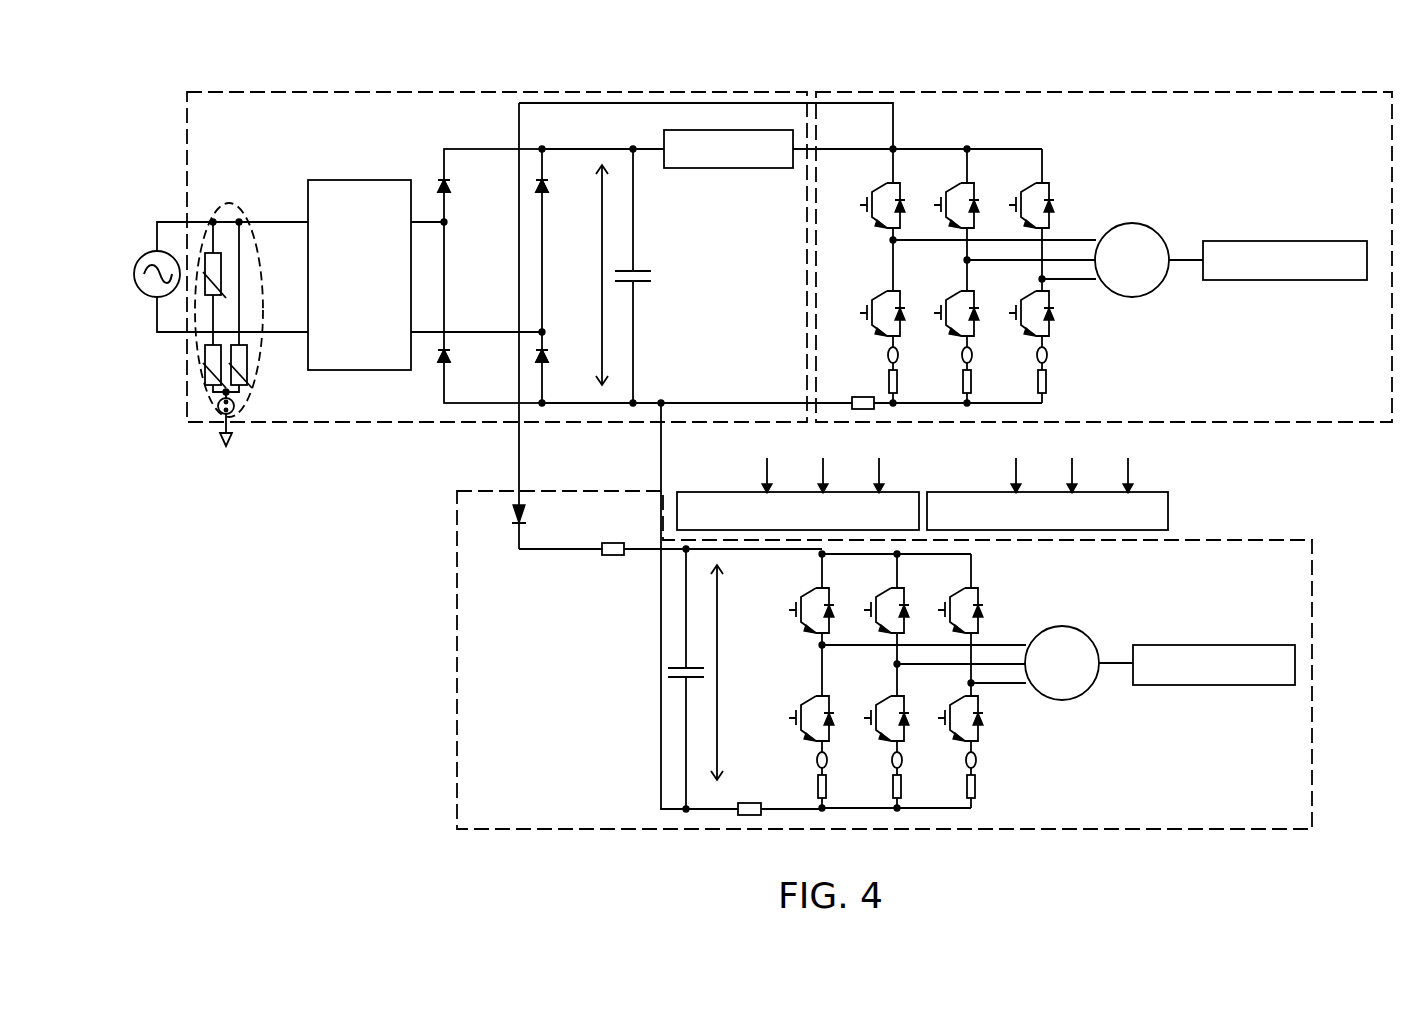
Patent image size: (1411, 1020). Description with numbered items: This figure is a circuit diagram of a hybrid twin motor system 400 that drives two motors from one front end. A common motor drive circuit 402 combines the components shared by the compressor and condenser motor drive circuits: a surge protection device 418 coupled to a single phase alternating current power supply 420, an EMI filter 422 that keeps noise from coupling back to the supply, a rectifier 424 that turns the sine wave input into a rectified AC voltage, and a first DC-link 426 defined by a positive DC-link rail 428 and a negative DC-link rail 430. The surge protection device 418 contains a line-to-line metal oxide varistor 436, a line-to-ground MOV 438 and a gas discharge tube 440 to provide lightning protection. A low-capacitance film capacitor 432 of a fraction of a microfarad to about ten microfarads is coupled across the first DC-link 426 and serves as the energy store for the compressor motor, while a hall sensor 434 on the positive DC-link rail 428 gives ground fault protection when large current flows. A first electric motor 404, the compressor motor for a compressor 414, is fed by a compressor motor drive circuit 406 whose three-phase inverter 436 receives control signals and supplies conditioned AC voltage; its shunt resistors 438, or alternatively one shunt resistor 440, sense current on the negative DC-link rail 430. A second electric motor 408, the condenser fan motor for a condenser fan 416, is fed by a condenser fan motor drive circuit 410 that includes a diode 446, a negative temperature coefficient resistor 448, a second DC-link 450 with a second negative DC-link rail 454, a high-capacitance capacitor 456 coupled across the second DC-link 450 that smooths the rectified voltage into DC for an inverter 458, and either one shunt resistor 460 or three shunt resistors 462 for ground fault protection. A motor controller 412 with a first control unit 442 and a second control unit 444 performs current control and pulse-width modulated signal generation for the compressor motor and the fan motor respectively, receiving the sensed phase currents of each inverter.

The hybrid twin motor system 400 is at (417, 58).
The common motor drive circuit 402 is at (247, 92).
The compressor motor 404 is at (1132, 223).
The compressor motor drive circuit 406 is at (983, 74).
The condenser fan motor 408 is at (1062, 626).
The condenser fan motor drive circuit 410 is at (457, 633).
The motor controller 412 is at (951, 469).
The compressor 414 is at (1258, 241).
The condenser fan 416 is at (1178, 645).
The surge protection device 418 is at (222, 203).
The power supply 420 is at (151, 252).
The EMI filter 422 is at (338, 180).
The rectifier 424 is at (487, 139).
The first DC-link 426 is at (601, 275).
The positive DC-link rail 428 is at (565, 149).
The negative DC-link rail 430 is at (684, 403).
The low-capacitance capacitor 432 is at (642, 271).
The hall sensor 434 is at (693, 168).
The line-to-line metal oxide varistor / inverter 436 is at (216, 253).
The line-to-ground MOV / shunt resistors 438 is at (248, 366).
The gas discharge tube / shunt resistor 440 is at (234, 412).
The first control unit 442 is at (735, 492).
The second control unit 444 is at (1168, 511).
The diode 446 is at (519, 500).
The negative temperature coefficient resistor 448 is at (612, 556).
The second DC-link 450 is at (711, 672).
The second negative DC-link rail 454 is at (707, 809).
The high-capacitance capacitor 456 is at (670, 668).
The inverter 458 is at (986, 576).
The shunt resistor 460 is at (745, 803).
The shunt resistors 462 is at (966, 760).